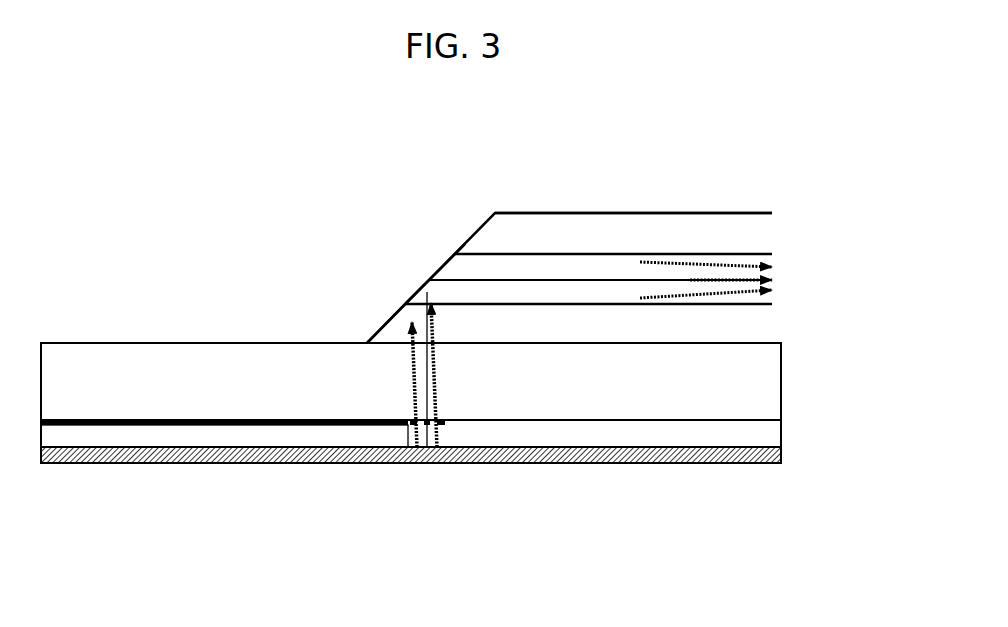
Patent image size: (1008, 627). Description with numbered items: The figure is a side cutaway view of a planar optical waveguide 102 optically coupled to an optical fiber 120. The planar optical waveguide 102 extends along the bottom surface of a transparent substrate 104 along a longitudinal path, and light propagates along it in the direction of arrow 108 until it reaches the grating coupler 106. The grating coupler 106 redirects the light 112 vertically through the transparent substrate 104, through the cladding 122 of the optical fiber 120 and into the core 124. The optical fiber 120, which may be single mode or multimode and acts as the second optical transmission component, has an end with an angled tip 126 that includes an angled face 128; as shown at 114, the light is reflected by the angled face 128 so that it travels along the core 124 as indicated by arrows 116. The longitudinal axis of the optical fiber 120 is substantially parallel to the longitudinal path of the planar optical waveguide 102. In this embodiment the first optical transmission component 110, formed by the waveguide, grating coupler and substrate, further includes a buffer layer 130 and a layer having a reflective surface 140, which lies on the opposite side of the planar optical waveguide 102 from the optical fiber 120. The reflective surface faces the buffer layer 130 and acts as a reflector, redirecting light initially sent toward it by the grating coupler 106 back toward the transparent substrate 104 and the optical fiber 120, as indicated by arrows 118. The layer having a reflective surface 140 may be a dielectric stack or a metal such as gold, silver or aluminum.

The planar optical waveguide 102 is at (148, 421).
The transparent substrate 104 is at (618, 377).
The grating coupler 106 is at (410, 432).
The arrow 108 is at (250, 443).
The first optical transmission component 110 is at (695, 398).
The light 112 is at (412, 377).
The reflection 114 is at (440, 262).
The arrows 116 is at (718, 262).
The arrows 118 is at (445, 440).
The optical fiber 120 is at (551, 212).
The cladding 122 is at (520, 235).
The core 124 is at (632, 270).
The angled tip 126 is at (392, 313).
The angled face 128 is at (422, 277).
The buffer layer 130 is at (712, 433).
The layer having a reflective surface 140 is at (614, 460).